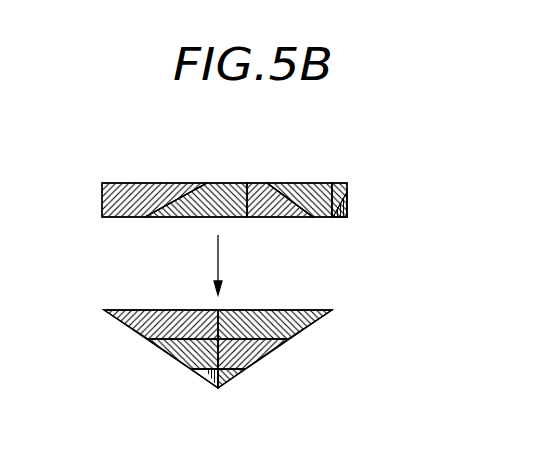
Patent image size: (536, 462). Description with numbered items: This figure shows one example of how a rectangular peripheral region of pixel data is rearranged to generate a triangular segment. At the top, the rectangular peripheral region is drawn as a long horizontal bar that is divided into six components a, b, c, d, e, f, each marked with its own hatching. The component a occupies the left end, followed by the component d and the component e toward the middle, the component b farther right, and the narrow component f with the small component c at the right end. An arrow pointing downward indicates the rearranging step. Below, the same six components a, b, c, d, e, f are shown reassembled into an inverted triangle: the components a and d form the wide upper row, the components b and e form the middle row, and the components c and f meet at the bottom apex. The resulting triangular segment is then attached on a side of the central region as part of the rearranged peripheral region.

The component a is at (160, 261).
The component b is at (240, 276).
The component c is at (348, 206).
The component d is at (238, 261).
The component e is at (265, 276).
The component f is at (343, 183).